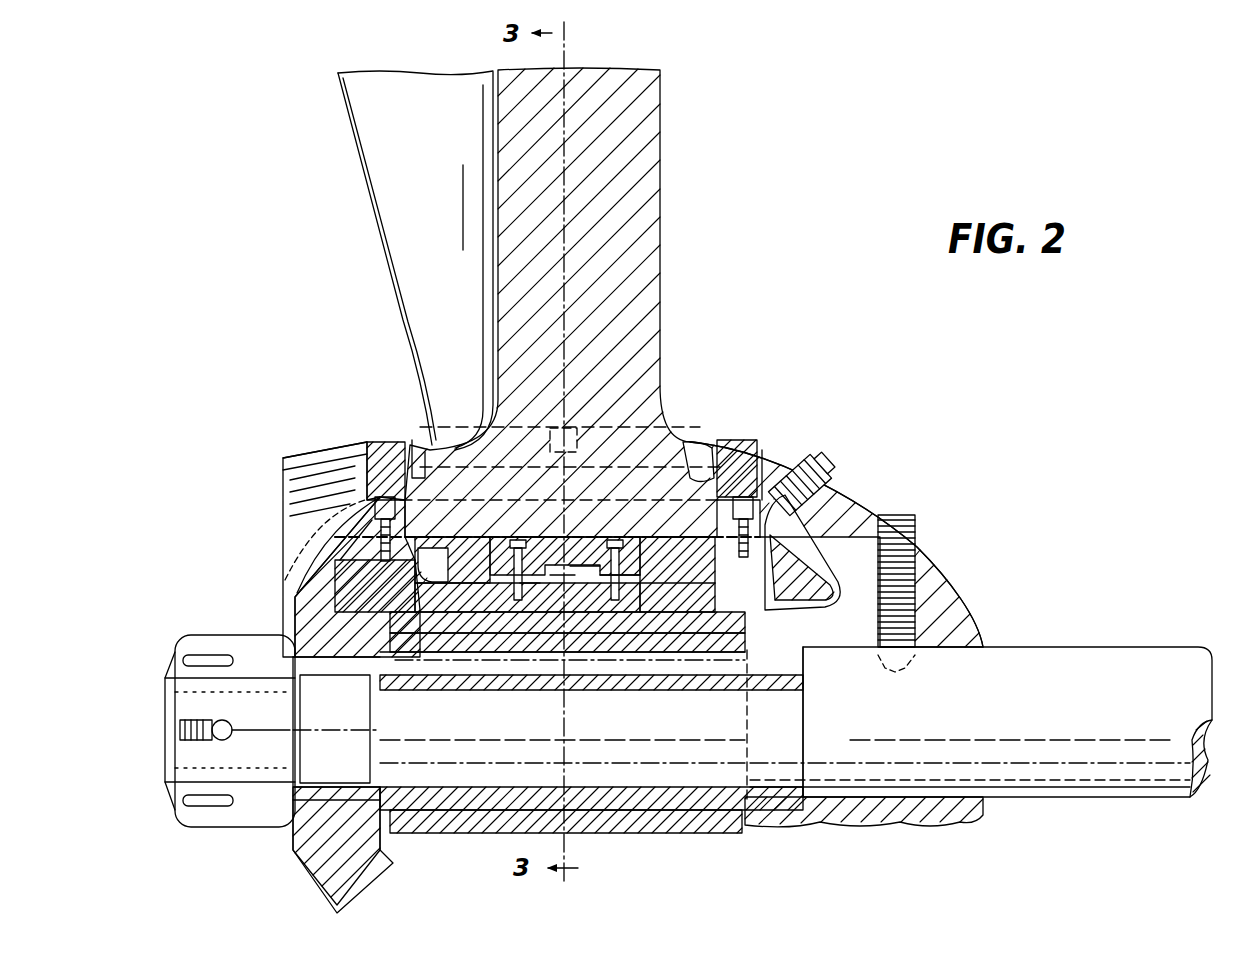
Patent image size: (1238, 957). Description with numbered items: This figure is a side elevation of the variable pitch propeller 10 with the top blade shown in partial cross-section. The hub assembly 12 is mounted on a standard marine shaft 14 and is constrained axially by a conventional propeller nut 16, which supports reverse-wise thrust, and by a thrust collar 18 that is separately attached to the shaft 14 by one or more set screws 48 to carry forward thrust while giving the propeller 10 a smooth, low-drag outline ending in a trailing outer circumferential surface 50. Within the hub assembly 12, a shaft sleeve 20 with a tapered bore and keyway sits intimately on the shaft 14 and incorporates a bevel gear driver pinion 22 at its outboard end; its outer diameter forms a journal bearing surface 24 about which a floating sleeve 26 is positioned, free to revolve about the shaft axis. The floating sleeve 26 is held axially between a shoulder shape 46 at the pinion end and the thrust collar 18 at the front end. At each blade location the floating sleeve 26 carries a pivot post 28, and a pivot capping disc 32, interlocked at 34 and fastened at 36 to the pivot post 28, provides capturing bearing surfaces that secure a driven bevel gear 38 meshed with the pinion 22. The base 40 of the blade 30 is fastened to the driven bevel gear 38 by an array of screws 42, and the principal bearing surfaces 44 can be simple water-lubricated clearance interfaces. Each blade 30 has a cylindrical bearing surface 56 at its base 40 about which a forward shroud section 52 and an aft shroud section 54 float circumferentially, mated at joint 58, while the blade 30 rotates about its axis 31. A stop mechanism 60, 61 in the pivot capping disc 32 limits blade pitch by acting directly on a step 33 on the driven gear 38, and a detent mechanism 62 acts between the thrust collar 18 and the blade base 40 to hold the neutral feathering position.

The variable pitch propeller 10 is at (842, 356).
The hub assembly 12 is at (280, 618).
The marine shaft 14 is at (1130, 660).
The propeller nut 16 is at (176, 746).
The thrust collar 18 is at (930, 565).
The shaft sleeve 20 is at (395, 646).
The bevel gear driver pinion 22 is at (332, 592).
The journal bearing surface 24 is at (645, 600).
The floating sleeve 26 is at (612, 600).
The pivot post 28 is at (578, 598).
The blade 30 is at (400, 173).
The blade axis 31 is at (563, 98).
The pivot capping disc 32 is at (505, 560).
The step 33 is at (748, 692).
The interlock 34 is at (562, 598).
The fastening 36 is at (530, 600).
The driven bevel gear 38 is at (828, 522).
The blade base 40 is at (604, 496).
The screws 42 is at (378, 506).
The principal bearing surfaces 44 is at (468, 560).
The shoulder shape 46 is at (357, 577).
The set screws 48 is at (948, 602).
The trailing outer circumferential surface 50 is at (766, 444).
The forward shroud section 52 is at (735, 455).
The aft shroud section 54 is at (385, 470).
The cylindrical bearing surface 56 is at (684, 470).
The joint 58 is at (575, 428).
The stop 60 is at (786, 593).
The stop 61 is at (345, 540).
The detent mechanism 62 is at (816, 474).